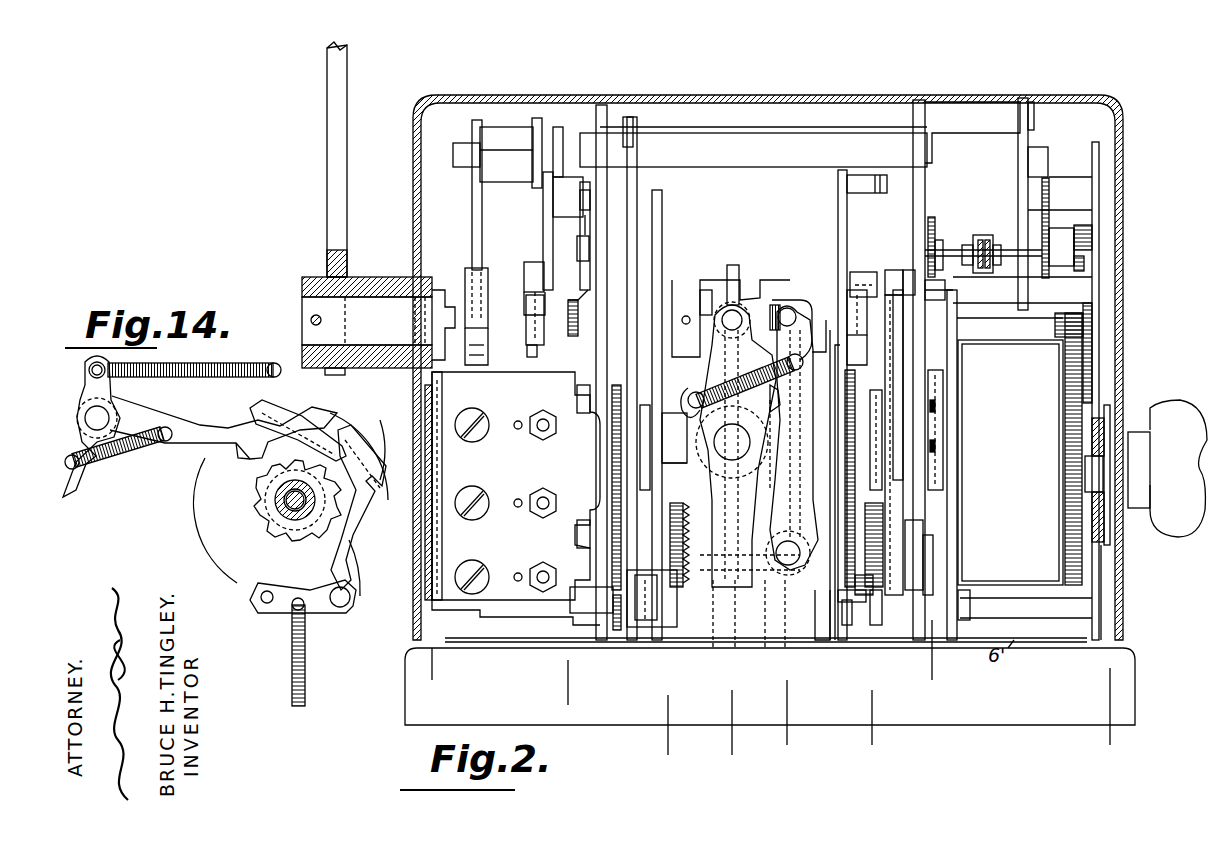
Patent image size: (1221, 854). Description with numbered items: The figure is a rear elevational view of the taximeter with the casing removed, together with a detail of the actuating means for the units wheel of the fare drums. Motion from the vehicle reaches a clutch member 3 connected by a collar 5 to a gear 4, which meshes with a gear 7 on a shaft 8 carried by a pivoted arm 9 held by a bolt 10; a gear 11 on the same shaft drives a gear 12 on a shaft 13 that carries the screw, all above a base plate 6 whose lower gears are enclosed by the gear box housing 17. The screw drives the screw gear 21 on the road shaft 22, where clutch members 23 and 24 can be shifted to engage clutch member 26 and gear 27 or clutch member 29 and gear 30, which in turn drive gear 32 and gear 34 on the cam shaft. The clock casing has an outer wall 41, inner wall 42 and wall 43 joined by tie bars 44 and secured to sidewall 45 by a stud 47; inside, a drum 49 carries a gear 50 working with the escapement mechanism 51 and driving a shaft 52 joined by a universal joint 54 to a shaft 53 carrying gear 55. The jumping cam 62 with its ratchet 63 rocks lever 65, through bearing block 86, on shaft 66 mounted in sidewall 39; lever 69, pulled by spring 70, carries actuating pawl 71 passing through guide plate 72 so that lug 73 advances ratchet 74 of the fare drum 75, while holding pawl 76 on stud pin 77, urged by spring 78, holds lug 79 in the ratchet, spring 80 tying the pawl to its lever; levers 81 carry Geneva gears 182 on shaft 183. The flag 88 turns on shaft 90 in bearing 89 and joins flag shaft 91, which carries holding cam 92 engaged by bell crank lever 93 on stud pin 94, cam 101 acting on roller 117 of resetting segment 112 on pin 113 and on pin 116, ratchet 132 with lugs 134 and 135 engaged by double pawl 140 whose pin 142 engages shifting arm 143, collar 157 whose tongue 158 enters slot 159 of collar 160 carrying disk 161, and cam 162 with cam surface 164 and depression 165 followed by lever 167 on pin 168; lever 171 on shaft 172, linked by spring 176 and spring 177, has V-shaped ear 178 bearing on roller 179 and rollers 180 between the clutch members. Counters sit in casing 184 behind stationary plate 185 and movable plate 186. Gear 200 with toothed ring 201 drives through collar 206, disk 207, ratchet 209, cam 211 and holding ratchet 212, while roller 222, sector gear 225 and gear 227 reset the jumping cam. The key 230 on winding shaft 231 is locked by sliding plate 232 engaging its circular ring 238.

In FIG. 2, the complementary clutch member 3 is at (432, 125).
In FIG. 2, the gear 4 is at (565, 115).
In FIG. 2, the collar 5 is at (1100, 125).
In FIG. 2, the base plate 6 is at (930, 105).
In FIG. 2, the gear 7 is at (667, 197).
In FIG. 2, the shaft 8 is at (732, 122).
In FIG. 2, the pivoted arm 9 is at (790, 122).
In FIG. 2, the bolt 10 is at (878, 115).
In FIG. 14, the gear 11 is at (347, 320).
In FIG. 2, the gear 11 is at (990, 370).
In FIG. 14, the gear 12 is at (406, 452).
In FIG. 2, the gear 12 is at (940, 437).
In FIG. 2, the shaft 13 is at (585, 558).
In FIG. 2, the gear box housing 17 is at (1032, 678).
In FIG. 2, the screw gear 21 is at (873, 620).
In FIG. 2, the road shaft 22 is at (905, 545).
In FIG. 2, the clutch member 23 is at (751, 626).
In FIG. 2, the clutch member 24 is at (712, 626).
In FIG. 2, the clutch member 26 is at (783, 626).
In FIG. 2, the gear 27 is at (848, 625).
In FIG. 2, the clutch member 29 is at (653, 621).
In FIG. 2, the gear 30 is at (618, 633).
In FIG. 2, the gear 32 is at (613, 372).
In FIG. 2, the gear 34 is at (848, 390).
In FIG. 2, the sidewall 39 is at (594, 153).
In FIG. 2, the outer wall 41 is at (1100, 213).
In FIG. 2, the inner wall 42 is at (951, 403).
In FIG. 2, the wall 43 is at (1028, 140).
In FIG. 2, the tie bars 44 is at (1008, 448).
In FIG. 2, the sidewall 45 is at (913, 147).
In FIG. 2, the stud 47 is at (972, 132).
In FIG. 2, the drum 49 is at (1010, 462).
In FIG. 2, the gear 50 is at (1068, 478).
In FIG. 2, the escapement mechanism 51 is at (1049, 200).
In FIG. 2, the shaft 52 is at (1010, 248).
In FIG. 2, the shaft 53 is at (1008, 245).
In FIG. 2, the universal joint 54 is at (982, 236).
In FIG. 2, the gear 55 is at (932, 220).
In FIG. 2, the jumping cam 62 is at (876, 398).
In FIG. 2, the ratchet 63 is at (880, 480).
In FIG. 2, the lever 65 is at (863, 248).
In FIG. 2, the shaft 66 is at (870, 625).
In FIG. 14, the lever 69 is at (78, 484).
In FIG. 2, the lever 69 is at (628, 197).
In FIG. 14, the spring 70 is at (203, 366).
In FIG. 14, the actuating pawl 71 is at (198, 425).
In FIG. 14, the guide plate 72 is at (262, 416).
In FIG. 14, the lug 73 is at (227, 468).
In FIG. 14, the ratchet 74 is at (266, 538).
In FIG. 14, the fare drum 75 is at (232, 580).
In FIG. 14, the holding pawl 76 is at (325, 575).
In FIG. 14, the stud pin 77 is at (346, 612).
In FIG. 14, the spring 78 is at (304, 660).
In FIG. 14, the lug 79 is at (340, 516).
In FIG. 14, the spring 80 is at (130, 455).
In FIG. 2, the levers 81 is at (662, 255).
In FIG. 2, the bearing block 86 is at (880, 478).
In FIG. 14, the flag 88 is at (328, 186).
In FIG. 14, the bearing 89 is at (368, 278).
In FIG. 14, the shaft 90 is at (378, 332).
In FIG. 2, the flag shaft 91 is at (492, 316).
In FIG. 2, the holding cam 92 is at (478, 368).
In FIG. 2, the bell crank lever 93 is at (474, 226).
In FIG. 2, the stud pin 94 is at (468, 170).
In FIG. 2, the cam 101 is at (527, 352).
In FIG. 2, the resetting segment 112 is at (548, 222).
In FIG. 2, the pin 113 is at (560, 244).
In FIG. 14, the pin 116 is at (265, 606).
In FIG. 2, the roller 117 is at (524, 277).
In FIG. 2, the ratchet 132 is at (574, 376).
In FIG. 2, the lug 134 is at (570, 320).
In FIG. 2, the lug 135 is at (543, 317).
In FIG. 2, the double pawl 140 is at (580, 248).
In FIG. 2, the pin 142 is at (585, 202).
In FIG. 2, the shifting arm 143 is at (590, 223).
In FIG. 2, the collar 157 is at (686, 283).
In FIG. 2, the tongue 158 is at (704, 320).
In FIG. 2, the slot 159 is at (704, 288).
In FIG. 2, the collar 160 is at (710, 302).
In FIG. 2, the disk 161 is at (732, 280).
In FIG. 2, the cam 162 is at (752, 298).
In FIG. 2, the cam surface 164 is at (772, 292).
In FIG. 2, the depression 165 is at (760, 300).
In FIG. 2, the lever 167 is at (798, 300).
In FIG. 2, the pin 168 is at (790, 540).
In FIG. 2, the lever 171 is at (750, 444).
In FIG. 2, the shaft 172 is at (735, 442).
In FIG. 2, the spring 176 is at (697, 378).
In FIG. 2, the spring 177 is at (776, 300).
In FIG. 2, the V-shaped ear 178 is at (826, 333).
In FIG. 2, the roller 179 is at (772, 392).
In FIG. 2, the rollers 180 is at (730, 660).
In FIG. 2, the Geneva gears 182 is at (861, 272).
In FIG. 2, the shaft 183 is at (847, 335).
In FIG. 2, the casing 184 is at (560, 449).
In FIG. 2, the stationary plate 185 is at (440, 525).
In FIG. 2, the movable plate 186 is at (440, 449).
In FIG. 2, the gear 200 is at (792, 440).
In FIG. 2, the toothed ring 201 is at (775, 478).
In FIG. 2, the collar 206 is at (732, 442).
In FIG. 2, the disk 207 is at (679, 535).
In FIG. 2, the ratchet 209 is at (680, 449).
In FIG. 2, the cam 211 is at (645, 405).
In FIG. 2, the holding ratchet 212 is at (640, 440).
In FIG. 2, the roller 222 is at (905, 260).
In FIG. 2, the sector gear 225 is at (972, 355).
In FIG. 2, the gear 227 is at (943, 471).
In FIG. 2, the key 230 is at (1178, 468).
In FIG. 2, the winding shaft 231 is at (1105, 480).
In FIG. 2, the sliding plate 232 is at (1108, 408).
In FIG. 2, the circular ring 238 is at (1096, 466).